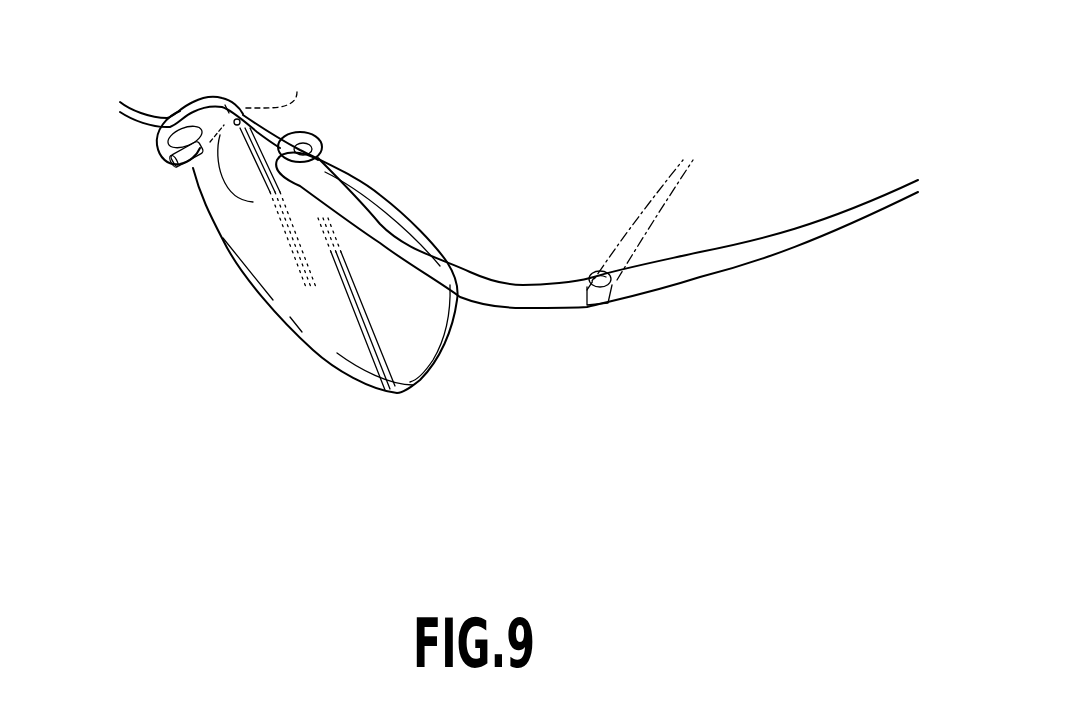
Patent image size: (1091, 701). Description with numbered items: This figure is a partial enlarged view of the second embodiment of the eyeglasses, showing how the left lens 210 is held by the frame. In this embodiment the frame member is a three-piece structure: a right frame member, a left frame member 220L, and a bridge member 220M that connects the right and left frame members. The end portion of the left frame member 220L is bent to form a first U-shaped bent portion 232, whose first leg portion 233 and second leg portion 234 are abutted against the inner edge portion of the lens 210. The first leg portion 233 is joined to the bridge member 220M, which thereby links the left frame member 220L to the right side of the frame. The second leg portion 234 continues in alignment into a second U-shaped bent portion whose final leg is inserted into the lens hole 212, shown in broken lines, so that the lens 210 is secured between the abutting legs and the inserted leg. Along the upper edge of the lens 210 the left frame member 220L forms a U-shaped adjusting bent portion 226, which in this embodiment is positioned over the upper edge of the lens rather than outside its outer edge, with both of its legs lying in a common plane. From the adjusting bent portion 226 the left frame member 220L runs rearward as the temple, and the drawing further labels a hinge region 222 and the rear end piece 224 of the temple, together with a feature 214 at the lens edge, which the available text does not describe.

The lens 210 is at (323, 327).
The lens hole 212 is at (297, 92).
The lens notch 214 is at (212, 172).
The left frame member 220L is at (376, 235).
The bridge member 220M is at (141, 108).
The hinge 222 is at (600, 317).
The temple end piece 224 is at (752, 258).
The U-shaped adjusting bent portion 226 is at (304, 133).
The first U-shaped bent portion 232 is at (140, 143).
The first leg portion 233 is at (172, 110).
The second leg portion 234 is at (161, 130).